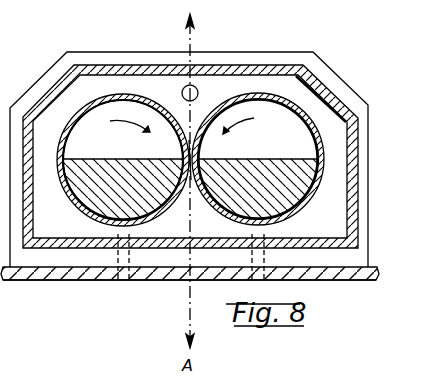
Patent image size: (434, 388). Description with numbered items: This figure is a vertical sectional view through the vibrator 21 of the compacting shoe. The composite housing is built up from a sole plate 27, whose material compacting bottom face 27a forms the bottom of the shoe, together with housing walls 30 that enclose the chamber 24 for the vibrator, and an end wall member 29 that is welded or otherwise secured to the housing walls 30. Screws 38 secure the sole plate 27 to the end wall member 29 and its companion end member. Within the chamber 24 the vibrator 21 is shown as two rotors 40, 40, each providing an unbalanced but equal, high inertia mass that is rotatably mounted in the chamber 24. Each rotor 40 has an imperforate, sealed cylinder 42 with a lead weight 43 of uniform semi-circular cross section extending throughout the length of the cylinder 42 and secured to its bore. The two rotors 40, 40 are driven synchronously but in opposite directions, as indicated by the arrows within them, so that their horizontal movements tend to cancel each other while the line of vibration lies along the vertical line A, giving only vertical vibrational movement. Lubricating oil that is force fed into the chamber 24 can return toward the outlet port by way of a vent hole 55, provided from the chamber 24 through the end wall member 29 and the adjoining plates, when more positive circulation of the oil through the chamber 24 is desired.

The vibrator 21 is at (205, 202).
The chamber 24 is at (313, 99).
The sole plate 27 is at (56, 281).
The material compacting bottom face 27a is at (167, 281).
The end wall member 29 is at (340, 79).
The housing walls 30 is at (268, 65).
The screws 38 is at (120, 281).
The rotor 40 is at (131, 96).
The cylinder 42 is at (80, 113).
The lead weight 43 is at (190, 189).
The vent hole 55 is at (198, 93).